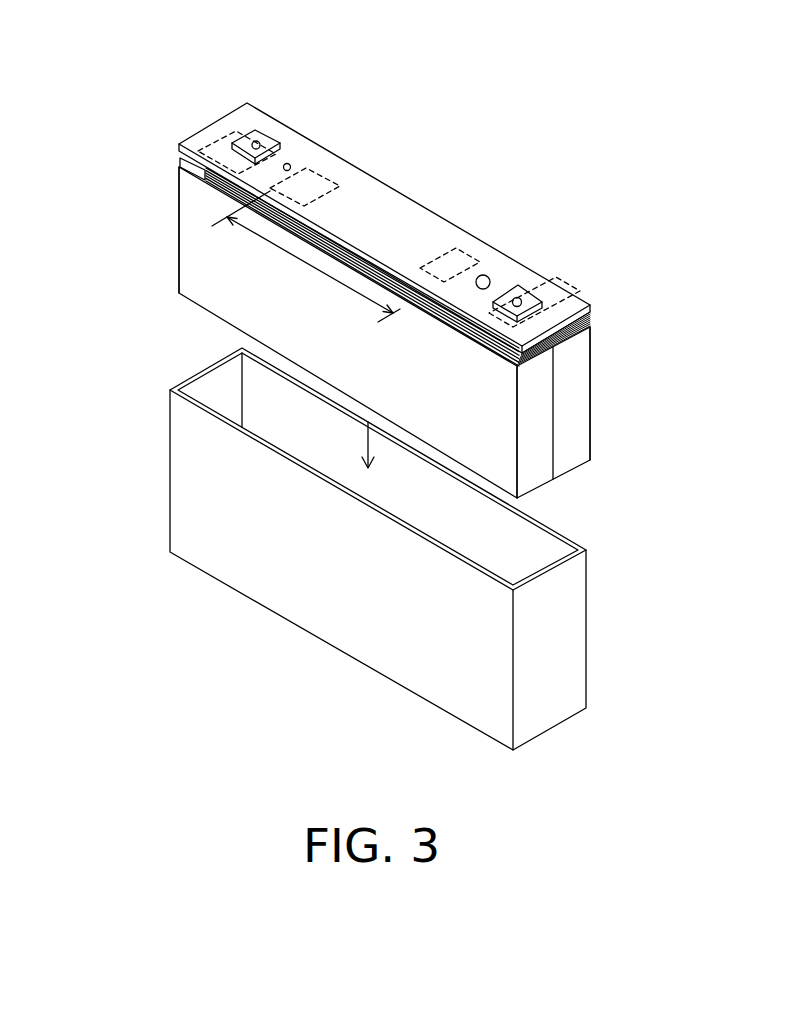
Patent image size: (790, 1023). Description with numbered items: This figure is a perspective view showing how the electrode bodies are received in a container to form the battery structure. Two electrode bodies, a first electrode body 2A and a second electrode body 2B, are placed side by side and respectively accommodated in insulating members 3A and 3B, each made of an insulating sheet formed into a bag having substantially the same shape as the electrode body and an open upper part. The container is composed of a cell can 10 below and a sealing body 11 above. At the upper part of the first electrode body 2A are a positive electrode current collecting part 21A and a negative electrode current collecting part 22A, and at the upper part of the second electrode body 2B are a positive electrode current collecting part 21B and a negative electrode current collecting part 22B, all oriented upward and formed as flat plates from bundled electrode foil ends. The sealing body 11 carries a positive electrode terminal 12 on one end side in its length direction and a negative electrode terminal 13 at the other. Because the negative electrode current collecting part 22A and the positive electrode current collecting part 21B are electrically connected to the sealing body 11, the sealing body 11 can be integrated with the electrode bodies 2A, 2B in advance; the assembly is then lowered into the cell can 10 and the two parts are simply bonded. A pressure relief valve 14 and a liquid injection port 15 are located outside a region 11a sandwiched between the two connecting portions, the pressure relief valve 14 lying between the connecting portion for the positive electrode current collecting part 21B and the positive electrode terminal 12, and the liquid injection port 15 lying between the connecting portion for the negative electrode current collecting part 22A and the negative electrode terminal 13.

The cell can 10 is at (320, 612).
The sealing body 11 is at (393, 205).
The region 11a is at (310, 265).
The positive electrode terminal 12 is at (515, 284).
The negative electrode terminal 13 is at (264, 136).
The pressure relief valve 14 is at (490, 274).
The liquid injection port 15 is at (289, 163).
The positive electrode current collecting part 21A is at (560, 287).
The positive electrode current collecting part 21B is at (478, 237).
The negative electrode current collecting part 22A is at (345, 155).
The negative electrode current collecting part 22B is at (210, 133).
The first electrode body 2A is at (614, 354).
The second electrode body 2B is at (124, 257).
The insulating member 3A is at (592, 413).
The insulating member 3B is at (190, 290).